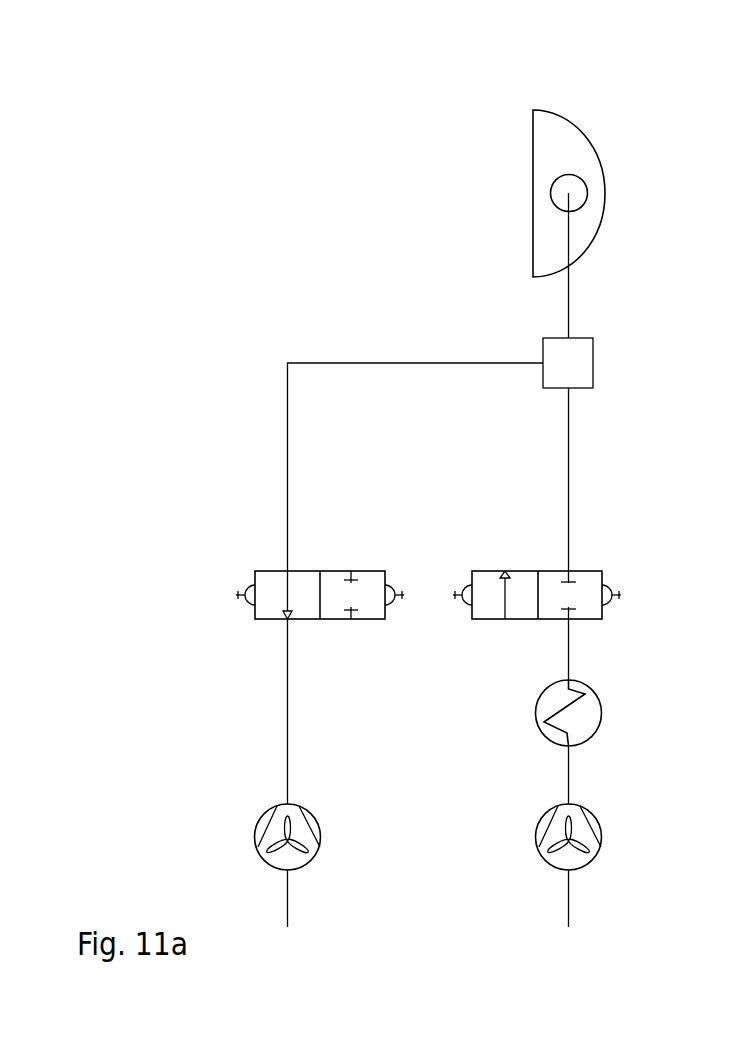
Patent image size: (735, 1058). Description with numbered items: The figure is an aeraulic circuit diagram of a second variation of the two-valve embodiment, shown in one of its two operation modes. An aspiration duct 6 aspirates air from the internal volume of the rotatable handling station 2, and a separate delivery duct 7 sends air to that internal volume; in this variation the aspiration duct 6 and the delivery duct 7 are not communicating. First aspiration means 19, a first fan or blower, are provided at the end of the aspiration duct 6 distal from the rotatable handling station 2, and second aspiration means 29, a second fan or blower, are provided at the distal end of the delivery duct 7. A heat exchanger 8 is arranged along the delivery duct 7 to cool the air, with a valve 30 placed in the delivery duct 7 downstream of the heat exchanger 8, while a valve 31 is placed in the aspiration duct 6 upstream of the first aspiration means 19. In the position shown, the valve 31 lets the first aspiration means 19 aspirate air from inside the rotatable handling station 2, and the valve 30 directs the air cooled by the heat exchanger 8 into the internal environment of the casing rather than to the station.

The rotatable handling station 2 is at (560, 118).
The aspiration duct 6 is at (353, 362).
The delivery duct 7 is at (567, 497).
The heat exchanger 8 is at (577, 718).
The first aspiration means 19 is at (272, 848).
The second aspiration means 29 is at (580, 850).
The valve 30 is at (577, 586).
The valve 31 is at (295, 595).